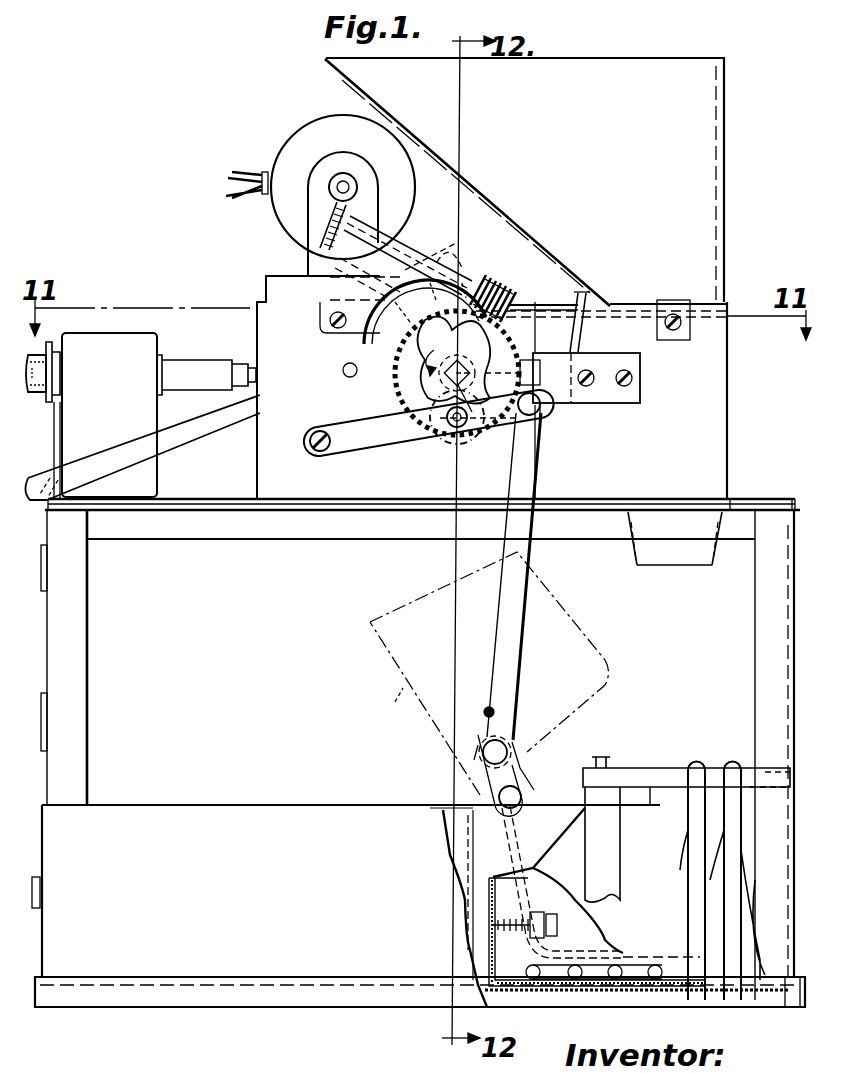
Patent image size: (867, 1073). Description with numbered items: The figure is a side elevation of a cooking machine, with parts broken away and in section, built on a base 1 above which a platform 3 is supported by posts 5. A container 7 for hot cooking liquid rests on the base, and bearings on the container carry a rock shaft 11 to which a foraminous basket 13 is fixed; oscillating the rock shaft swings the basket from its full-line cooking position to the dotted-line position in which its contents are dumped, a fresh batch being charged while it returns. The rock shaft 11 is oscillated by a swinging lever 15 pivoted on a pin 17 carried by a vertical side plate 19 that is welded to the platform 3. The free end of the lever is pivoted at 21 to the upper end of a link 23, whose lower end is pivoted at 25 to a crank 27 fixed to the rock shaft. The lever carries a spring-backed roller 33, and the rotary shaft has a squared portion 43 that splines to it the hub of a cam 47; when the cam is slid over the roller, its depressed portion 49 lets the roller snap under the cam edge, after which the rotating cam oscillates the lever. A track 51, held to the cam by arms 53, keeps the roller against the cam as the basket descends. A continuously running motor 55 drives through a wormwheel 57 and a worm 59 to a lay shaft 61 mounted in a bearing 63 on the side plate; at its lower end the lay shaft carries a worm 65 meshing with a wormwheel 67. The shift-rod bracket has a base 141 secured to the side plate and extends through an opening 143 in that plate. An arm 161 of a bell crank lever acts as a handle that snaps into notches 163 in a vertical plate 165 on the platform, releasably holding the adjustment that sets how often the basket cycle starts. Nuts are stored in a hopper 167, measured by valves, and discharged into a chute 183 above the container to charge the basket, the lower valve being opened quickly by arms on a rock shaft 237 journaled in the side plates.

The base 1 is at (233, 998).
The platform 3 is at (185, 497).
The posts 5 is at (753, 638).
The container 7 is at (490, 893).
The rock shaft 11 is at (505, 800).
The foraminous basket 13 is at (388, 696).
The swinging lever 15 is at (382, 442).
The pin 17 is at (310, 446).
The side plate 19 is at (722, 438).
The pivot 21 is at (540, 418).
The link 23 is at (522, 480).
The pivot 25 is at (505, 745).
The crank 27 is at (486, 777).
The roller 33 is at (440, 438).
The squared portion of shaft 43 is at (445, 375).
The cam 47 is at (355, 365).
The depressed portion of cam 49 is at (455, 398).
The track 51 is at (432, 262).
The arms 53 is at (385, 330).
The motor 55 is at (300, 128).
The wormwheel 57 is at (330, 190).
The worm 59 is at (308, 249).
The lay shaft 61 is at (455, 258).
The bearing 63 is at (408, 256).
The worm 65 is at (492, 296).
The wormwheel 67 is at (515, 334).
The bracket base 141 is at (598, 395).
The opening 143 is at (565, 415).
The arm of bell crank lever 161 is at (186, 438).
The notches 163 is at (62, 364).
The plate 165 is at (52, 443).
The hopper 167 is at (712, 142).
The chute 183 is at (665, 565).
The rock shaft 237 is at (345, 375).